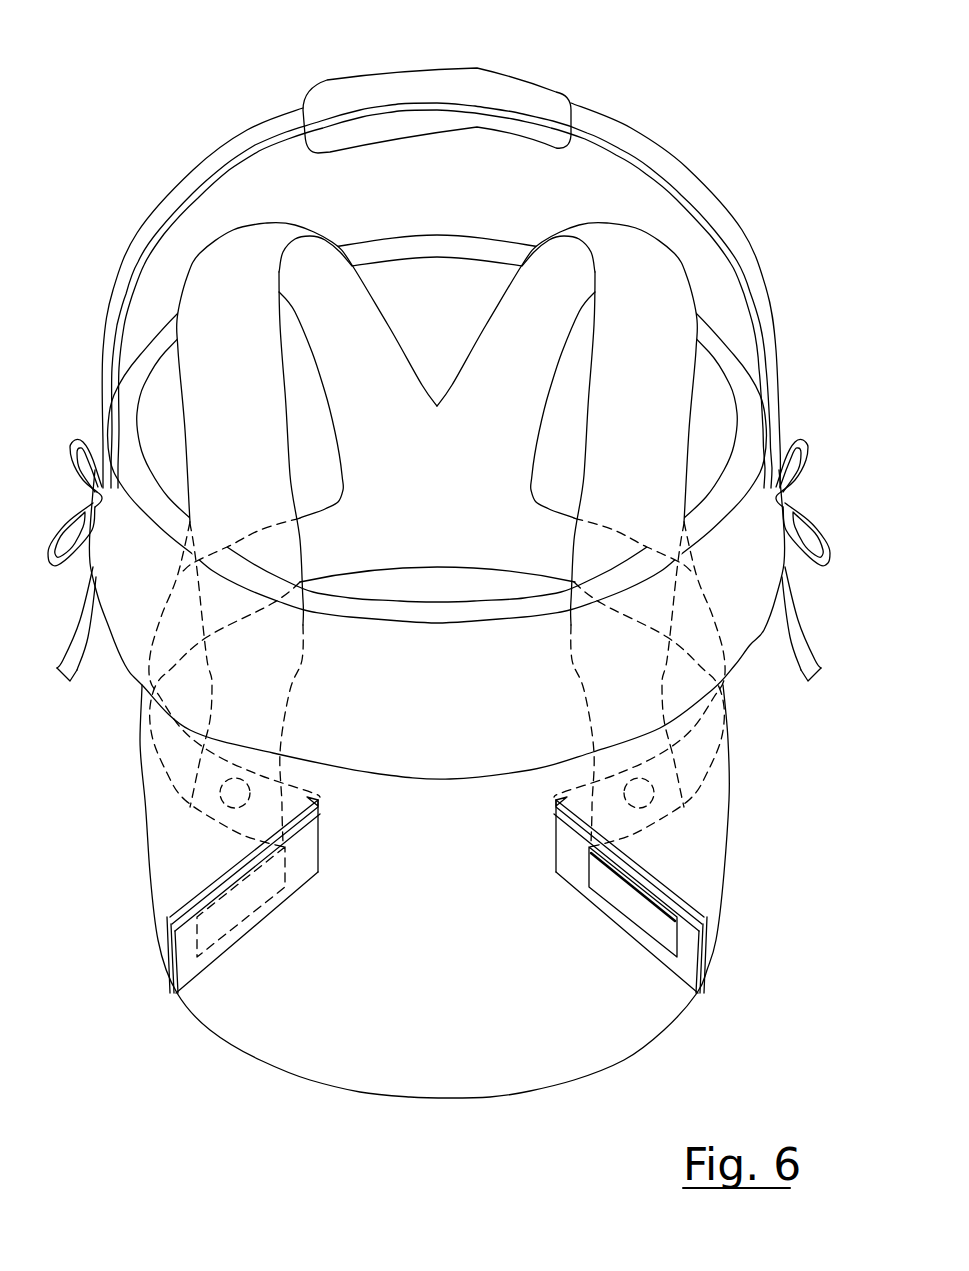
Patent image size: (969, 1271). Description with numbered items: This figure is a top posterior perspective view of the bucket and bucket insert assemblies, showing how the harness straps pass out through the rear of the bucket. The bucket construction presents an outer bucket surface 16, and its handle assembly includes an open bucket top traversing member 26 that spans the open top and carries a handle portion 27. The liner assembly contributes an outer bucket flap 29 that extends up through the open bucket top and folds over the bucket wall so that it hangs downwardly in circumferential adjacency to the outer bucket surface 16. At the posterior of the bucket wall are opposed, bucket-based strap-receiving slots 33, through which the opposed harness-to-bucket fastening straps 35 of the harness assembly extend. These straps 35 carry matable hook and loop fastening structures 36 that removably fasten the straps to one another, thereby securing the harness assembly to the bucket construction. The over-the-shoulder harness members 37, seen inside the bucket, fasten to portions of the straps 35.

The outer bucket surface 16 is at (703, 828).
The open bucket top traversing member 26 is at (641, 152).
The handle portion 27 is at (497, 83).
The outer bucket flap 29 is at (133, 638).
The bucket-based strap-receiving slots 33 is at (314, 873).
The harness-to-bucket fastening straps 35 is at (200, 973).
The hook and loop fastening structure 36 is at (237, 903).
The over-the-shoulder harness members 37 is at (313, 220).